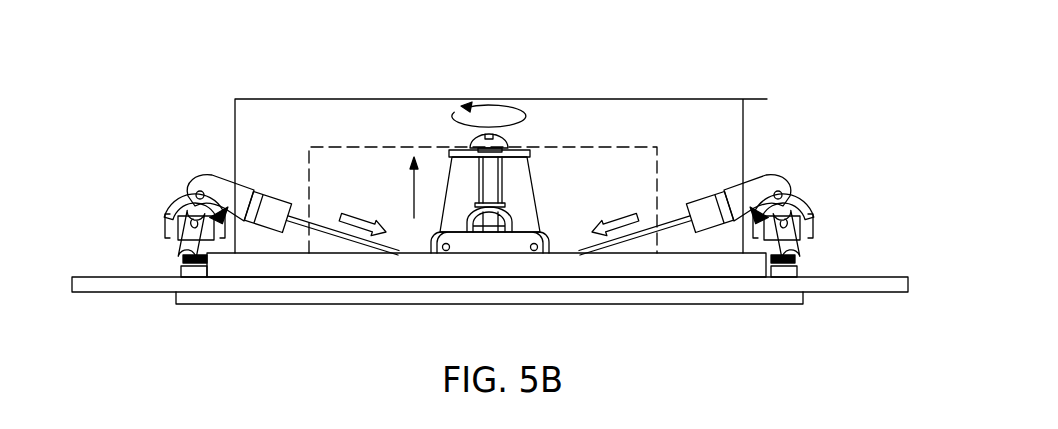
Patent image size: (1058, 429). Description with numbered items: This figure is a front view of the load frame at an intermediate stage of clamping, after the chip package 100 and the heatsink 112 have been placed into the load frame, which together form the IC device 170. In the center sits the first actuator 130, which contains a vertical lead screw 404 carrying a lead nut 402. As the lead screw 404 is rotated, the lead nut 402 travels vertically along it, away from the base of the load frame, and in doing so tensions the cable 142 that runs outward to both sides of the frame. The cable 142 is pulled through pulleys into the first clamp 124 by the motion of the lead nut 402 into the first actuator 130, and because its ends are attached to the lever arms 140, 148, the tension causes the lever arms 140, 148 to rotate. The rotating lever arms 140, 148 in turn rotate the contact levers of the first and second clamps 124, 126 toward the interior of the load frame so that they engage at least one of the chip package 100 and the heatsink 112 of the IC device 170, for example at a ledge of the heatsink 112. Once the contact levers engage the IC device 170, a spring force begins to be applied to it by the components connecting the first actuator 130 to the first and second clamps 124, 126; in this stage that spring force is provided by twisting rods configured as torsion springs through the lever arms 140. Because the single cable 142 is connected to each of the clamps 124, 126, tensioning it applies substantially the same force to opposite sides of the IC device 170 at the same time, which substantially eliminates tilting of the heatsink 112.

The chip package 100 is at (580, 147).
The heatsink 112 is at (752, 98).
The first clamp 124 is at (820, 212).
The second clamp 126 is at (158, 222).
The first actuator 130 is at (417, 128).
The lever arm 140 is at (795, 253).
The cable 142 is at (332, 228).
The lever arm 148 is at (183, 249).
The IC device 170 is at (650, 124).
The lead nut 402 is at (490, 215).
The lead screw 404 is at (499, 180).